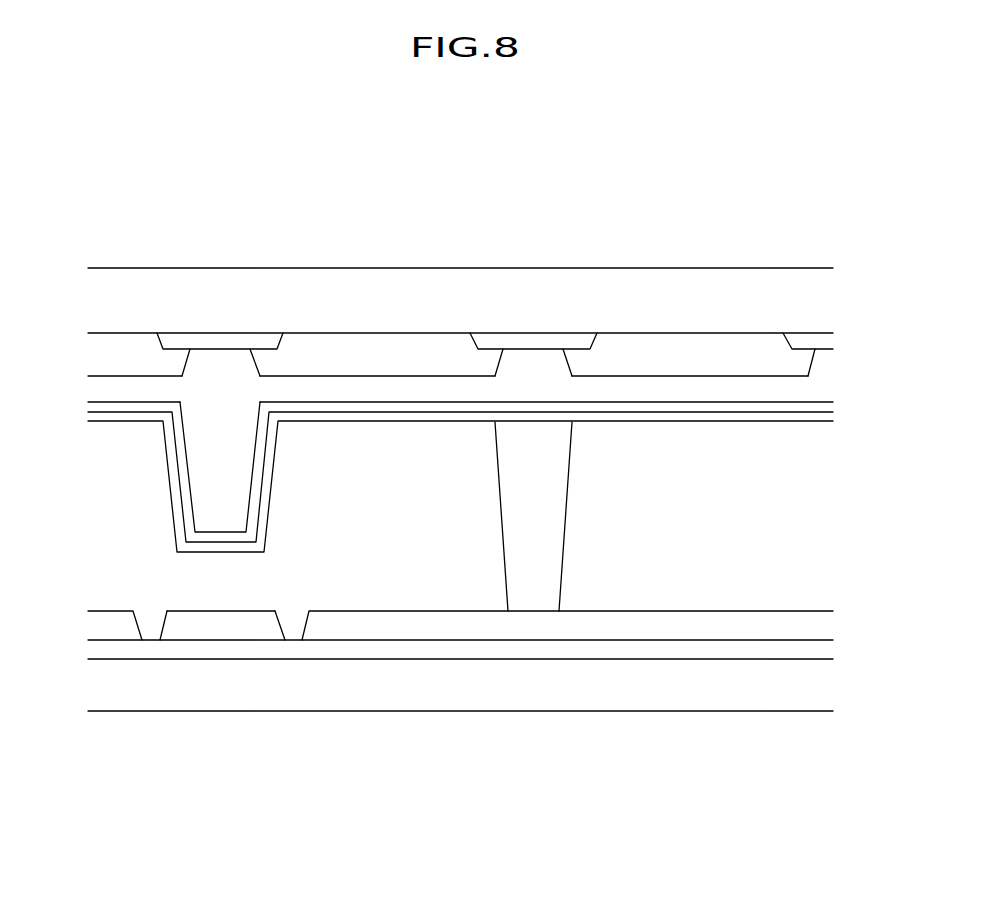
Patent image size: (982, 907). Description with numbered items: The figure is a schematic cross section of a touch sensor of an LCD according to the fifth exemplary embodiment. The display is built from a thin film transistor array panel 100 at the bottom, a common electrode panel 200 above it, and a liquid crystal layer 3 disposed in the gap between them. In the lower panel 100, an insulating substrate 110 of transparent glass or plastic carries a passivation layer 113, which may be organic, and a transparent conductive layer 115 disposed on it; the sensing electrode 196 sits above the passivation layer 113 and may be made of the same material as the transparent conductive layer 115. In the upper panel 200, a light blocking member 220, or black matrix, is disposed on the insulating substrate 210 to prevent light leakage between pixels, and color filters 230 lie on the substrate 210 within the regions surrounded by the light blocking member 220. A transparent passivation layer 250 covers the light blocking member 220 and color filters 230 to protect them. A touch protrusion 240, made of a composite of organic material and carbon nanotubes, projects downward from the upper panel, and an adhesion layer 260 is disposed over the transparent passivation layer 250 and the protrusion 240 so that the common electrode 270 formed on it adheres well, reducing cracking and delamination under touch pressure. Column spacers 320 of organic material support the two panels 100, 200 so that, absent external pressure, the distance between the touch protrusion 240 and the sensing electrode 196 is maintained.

The liquid crystal layer 3 is at (822, 493).
The thin film transistor array panel 100 is at (840, 611).
The insulating substrate 110 is at (357, 700).
The passivation layer 113 is at (455, 650).
The transparent conductive layer 115 is at (345, 632).
The sensing electrode 196 is at (180, 617).
The common electrode panel 200 is at (840, 268).
The insulating substrate 210 is at (315, 283).
The light blocking member 220 is at (215, 340).
The color filter 230 is at (133, 345).
The touch protrusion 240 is at (205, 458).
The transparent passivation layer 250 is at (117, 390).
The adhesion layer 260 is at (186, 491).
The common electrode 270 is at (179, 531).
The column spacer 320 is at (535, 597).